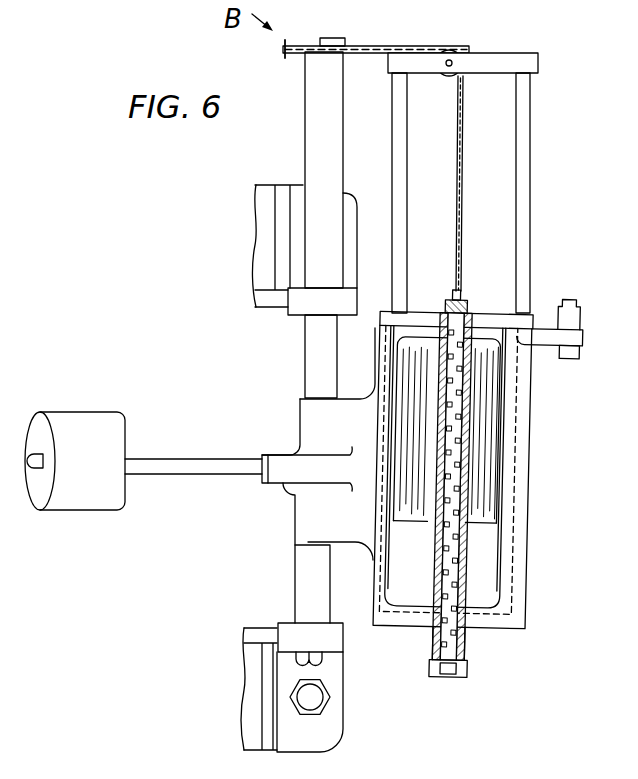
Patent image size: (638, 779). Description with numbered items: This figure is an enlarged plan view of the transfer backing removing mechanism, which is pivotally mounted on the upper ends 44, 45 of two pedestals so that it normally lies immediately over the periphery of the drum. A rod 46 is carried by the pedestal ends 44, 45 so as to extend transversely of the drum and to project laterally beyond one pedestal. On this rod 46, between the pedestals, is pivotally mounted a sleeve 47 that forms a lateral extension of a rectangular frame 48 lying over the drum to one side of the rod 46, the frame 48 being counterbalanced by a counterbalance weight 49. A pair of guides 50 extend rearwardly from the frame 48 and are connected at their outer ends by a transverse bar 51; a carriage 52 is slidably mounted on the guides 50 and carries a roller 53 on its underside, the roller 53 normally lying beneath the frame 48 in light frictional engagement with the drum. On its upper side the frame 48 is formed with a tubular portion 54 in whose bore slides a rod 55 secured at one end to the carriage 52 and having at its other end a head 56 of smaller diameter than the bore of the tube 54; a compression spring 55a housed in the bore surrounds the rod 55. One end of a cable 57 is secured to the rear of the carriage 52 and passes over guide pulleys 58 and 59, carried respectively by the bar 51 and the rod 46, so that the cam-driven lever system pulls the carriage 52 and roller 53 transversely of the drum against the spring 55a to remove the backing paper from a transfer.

The upper end of pedestal 44 is at (331, 731).
The upper end of pedestal 45 is at (293, 190).
The rod 46 is at (311, 351).
The sleeve 47 is at (298, 512).
The rectangular frame 48 is at (527, 470).
The counterbalance weight 49 is at (86, 418).
The guides 50 is at (393, 117).
The transverse bar 51 is at (504, 62).
The carriage 52 is at (496, 318).
The roller 53 is at (502, 426).
The tubular portion 54 is at (473, 640).
The rod 55 is at (452, 470).
The compression spring 55a is at (462, 552).
The head 56 is at (443, 676).
The cable 57 is at (464, 126).
The guide pulley 58 is at (449, 50).
The guide pulley 59 is at (333, 44).